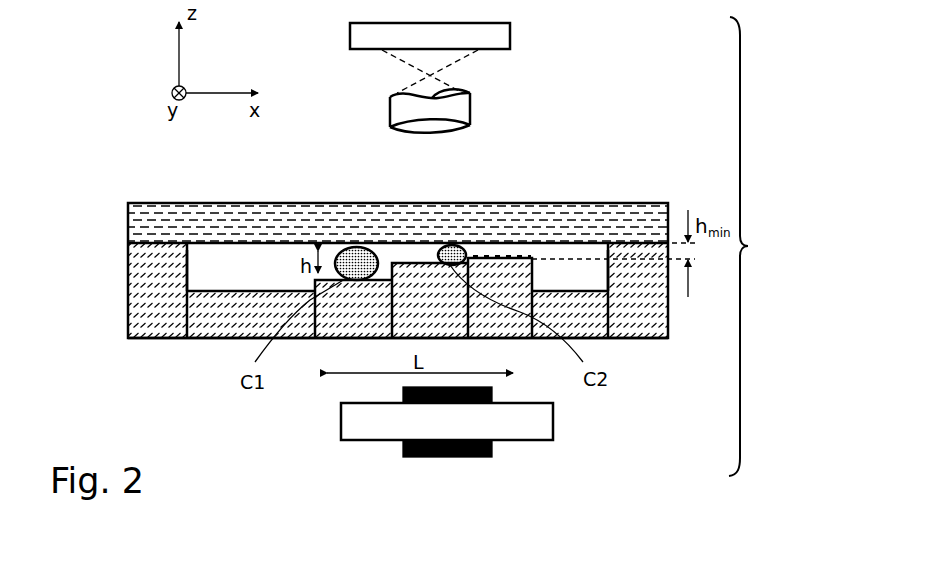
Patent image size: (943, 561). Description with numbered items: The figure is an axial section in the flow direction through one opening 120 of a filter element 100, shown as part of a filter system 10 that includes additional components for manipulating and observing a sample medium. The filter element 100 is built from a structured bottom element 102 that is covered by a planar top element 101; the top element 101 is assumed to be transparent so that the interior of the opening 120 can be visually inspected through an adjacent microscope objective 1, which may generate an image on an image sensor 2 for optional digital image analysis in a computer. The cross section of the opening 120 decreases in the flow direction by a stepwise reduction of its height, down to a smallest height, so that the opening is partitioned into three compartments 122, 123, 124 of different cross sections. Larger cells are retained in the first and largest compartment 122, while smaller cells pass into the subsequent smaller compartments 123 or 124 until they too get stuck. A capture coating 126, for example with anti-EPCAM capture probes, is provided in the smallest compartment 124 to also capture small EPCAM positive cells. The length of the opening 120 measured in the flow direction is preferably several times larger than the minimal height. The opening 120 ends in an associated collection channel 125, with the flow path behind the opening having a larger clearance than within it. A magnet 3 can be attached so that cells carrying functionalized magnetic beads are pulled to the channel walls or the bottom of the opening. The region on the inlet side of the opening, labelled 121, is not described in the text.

The microscope objective 1 is at (460, 106).
The image sensor 2 is at (500, 36).
The magnet 3 is at (540, 421).
The filter system 10 is at (764, 246).
The filter element 100 is at (127, 171).
The top element 101 is at (143, 224).
The bottom element 102 is at (121, 297).
The opening 120 is at (422, 228).
The inlet channel 121 is at (245, 270).
The first compartment 122 is at (329, 257).
The second compartment 123 is at (411, 259).
The third compartment 124 is at (488, 252).
The collection channel 125 is at (573, 270).
The capture coating 126 is at (526, 256).